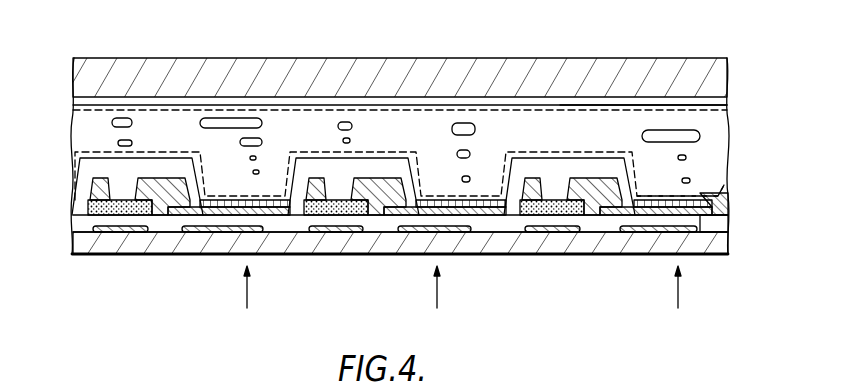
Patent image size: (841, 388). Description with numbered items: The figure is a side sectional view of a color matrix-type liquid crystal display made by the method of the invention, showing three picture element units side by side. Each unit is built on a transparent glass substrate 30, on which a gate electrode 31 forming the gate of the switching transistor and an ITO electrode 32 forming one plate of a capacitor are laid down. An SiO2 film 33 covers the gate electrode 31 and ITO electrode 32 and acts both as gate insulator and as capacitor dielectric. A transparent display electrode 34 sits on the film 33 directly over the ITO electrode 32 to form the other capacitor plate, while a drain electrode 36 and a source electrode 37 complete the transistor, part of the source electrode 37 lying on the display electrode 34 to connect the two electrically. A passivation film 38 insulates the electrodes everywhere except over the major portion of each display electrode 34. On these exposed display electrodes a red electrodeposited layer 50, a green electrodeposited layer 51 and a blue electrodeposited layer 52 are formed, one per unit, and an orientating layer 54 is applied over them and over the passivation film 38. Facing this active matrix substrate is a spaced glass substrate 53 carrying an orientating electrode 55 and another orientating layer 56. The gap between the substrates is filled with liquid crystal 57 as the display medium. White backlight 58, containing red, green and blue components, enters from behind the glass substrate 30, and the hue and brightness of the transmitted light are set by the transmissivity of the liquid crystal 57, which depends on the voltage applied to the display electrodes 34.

The transparent glass substrate 30 is at (118, 240).
The gate electrode 31 is at (127, 233).
The ITO electrode 32 is at (198, 232).
The SiO2 film 33 is at (80, 222).
The display electrode 34 is at (178, 213).
The drain electrode 36 is at (95, 180).
The source electrode 37 is at (175, 187).
The passivation film 38 is at (152, 165).
The red electrodeposited layer 50 is at (237, 205).
The green electrodeposited layer 51 is at (477, 204).
The blue electrodeposited layer 52 is at (700, 212).
The glass substrate 53 is at (135, 62).
The orientating layer 54 is at (718, 192).
The orientating electrode 55 is at (177, 100).
The orientating layer 56 is at (666, 110).
The liquid crystal 57 is at (88, 117).
The white backlight 58 is at (465, 301).